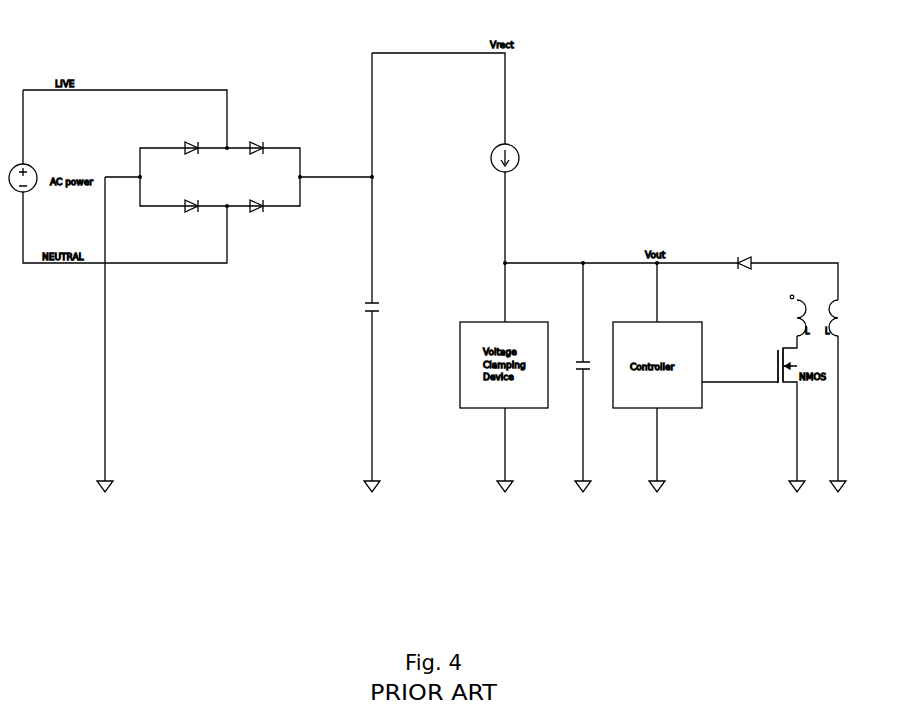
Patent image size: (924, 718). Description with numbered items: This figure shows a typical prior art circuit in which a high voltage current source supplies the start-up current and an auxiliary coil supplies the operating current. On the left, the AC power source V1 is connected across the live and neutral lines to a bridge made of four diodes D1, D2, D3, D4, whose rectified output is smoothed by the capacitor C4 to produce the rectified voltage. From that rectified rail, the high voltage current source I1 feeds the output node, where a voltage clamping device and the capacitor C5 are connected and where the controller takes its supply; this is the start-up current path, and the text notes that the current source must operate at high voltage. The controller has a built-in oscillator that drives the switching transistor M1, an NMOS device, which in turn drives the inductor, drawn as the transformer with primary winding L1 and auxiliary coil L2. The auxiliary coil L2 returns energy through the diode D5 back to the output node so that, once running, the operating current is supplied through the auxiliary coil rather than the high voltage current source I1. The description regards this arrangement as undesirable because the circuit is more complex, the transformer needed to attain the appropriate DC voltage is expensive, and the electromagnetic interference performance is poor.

The AC power source V1 is at (28, 174).
The bridge rectifier diode D1 is at (190, 141).
The bridge rectifier diode D2 is at (256, 141).
The bridge rectifier diode D3 is at (190, 200).
The bridge rectifier diode D4 is at (256, 200).
The output diode D5 is at (744, 257).
The rectified voltage capacitor C4 is at (377, 301).
The output capacitor C5 is at (587, 360).
The current source I1 is at (506, 159).
The NMOS switching transistor M1 is at (795, 365).
The transformer primary winding L1 is at (802, 315).
The transformer secondary winding L2 is at (826, 318).